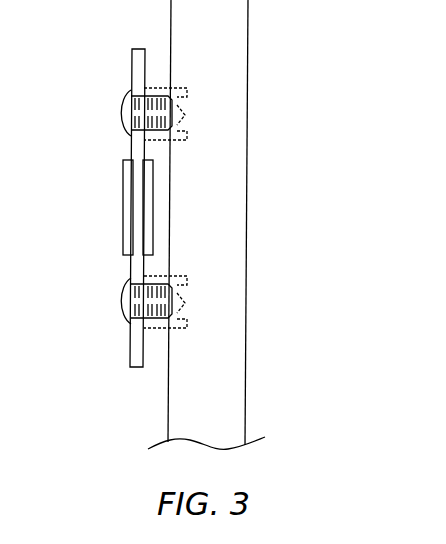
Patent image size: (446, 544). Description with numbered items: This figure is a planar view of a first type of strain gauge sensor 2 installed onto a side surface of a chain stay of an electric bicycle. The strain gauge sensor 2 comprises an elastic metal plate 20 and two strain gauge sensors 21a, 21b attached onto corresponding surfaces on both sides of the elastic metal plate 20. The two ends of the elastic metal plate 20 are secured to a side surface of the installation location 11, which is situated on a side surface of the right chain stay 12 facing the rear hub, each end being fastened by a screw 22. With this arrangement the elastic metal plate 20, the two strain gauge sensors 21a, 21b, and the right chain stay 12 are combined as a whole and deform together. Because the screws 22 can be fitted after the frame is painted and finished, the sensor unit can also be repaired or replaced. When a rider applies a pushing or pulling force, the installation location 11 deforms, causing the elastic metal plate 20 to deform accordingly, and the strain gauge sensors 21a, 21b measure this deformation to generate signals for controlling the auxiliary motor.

The strain gauge sensor 2 is at (106, 162).
The installation location 11 is at (171, 225).
The right chain stay 12 is at (182, 399).
The elastic metal plate 20 is at (138, 72).
The strain gauge sensor 21a is at (128, 198).
The strain gauge sensor 21b is at (148, 193).
The screw 22 is at (130, 113).